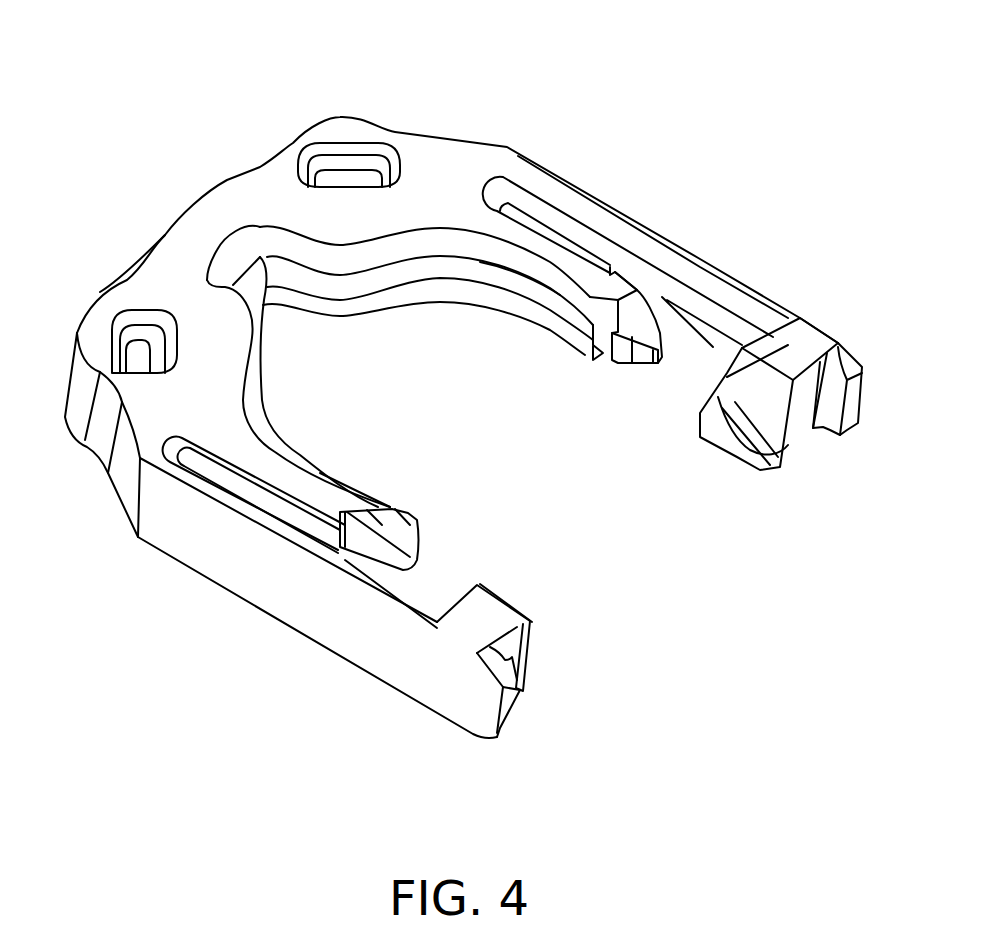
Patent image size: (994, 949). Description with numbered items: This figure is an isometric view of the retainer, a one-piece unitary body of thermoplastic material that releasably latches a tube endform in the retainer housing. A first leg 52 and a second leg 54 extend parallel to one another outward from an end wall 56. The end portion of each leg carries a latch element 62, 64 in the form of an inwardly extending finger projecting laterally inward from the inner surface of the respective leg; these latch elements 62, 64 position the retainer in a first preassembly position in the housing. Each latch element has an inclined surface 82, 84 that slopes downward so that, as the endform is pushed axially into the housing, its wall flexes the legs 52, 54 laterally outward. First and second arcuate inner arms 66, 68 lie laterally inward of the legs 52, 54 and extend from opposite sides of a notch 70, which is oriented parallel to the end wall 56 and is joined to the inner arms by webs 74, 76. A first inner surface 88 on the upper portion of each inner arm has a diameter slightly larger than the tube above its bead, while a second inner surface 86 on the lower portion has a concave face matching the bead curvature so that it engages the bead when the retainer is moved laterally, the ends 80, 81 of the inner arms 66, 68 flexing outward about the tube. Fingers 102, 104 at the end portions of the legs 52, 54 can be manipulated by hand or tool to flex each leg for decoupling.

The first leg 52 is at (270, 570).
The second leg 54 is at (612, 207).
The end wall 56 is at (177, 210).
The latch element 62 is at (510, 640).
The latch element 64 is at (798, 420).
The first arcuate inner arm 66 is at (371, 487).
The second arcuate inner arm 68 is at (573, 350).
The notch 70 is at (256, 257).
The web 74 is at (197, 343).
The web 76 is at (430, 195).
The end of inner arm 80 is at (423, 517).
The end of inner arm 81 is at (640, 353).
The inclined surface 82 is at (508, 607).
The inclined surface 84 is at (737, 400).
The second inner surface 86 is at (520, 308).
The first inner surface 88 is at (478, 245).
The finger 102 is at (513, 707).
The finger 104 is at (866, 388).